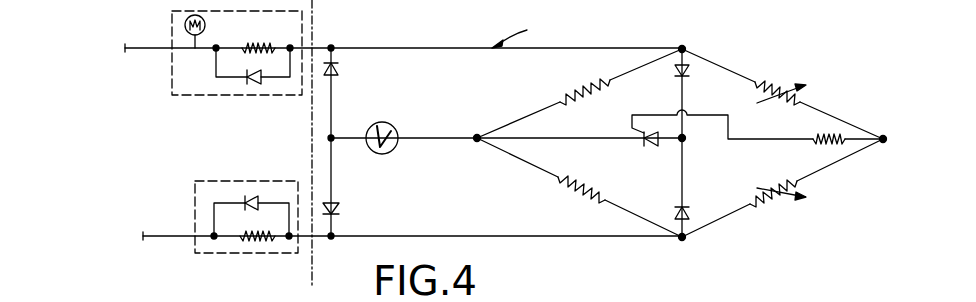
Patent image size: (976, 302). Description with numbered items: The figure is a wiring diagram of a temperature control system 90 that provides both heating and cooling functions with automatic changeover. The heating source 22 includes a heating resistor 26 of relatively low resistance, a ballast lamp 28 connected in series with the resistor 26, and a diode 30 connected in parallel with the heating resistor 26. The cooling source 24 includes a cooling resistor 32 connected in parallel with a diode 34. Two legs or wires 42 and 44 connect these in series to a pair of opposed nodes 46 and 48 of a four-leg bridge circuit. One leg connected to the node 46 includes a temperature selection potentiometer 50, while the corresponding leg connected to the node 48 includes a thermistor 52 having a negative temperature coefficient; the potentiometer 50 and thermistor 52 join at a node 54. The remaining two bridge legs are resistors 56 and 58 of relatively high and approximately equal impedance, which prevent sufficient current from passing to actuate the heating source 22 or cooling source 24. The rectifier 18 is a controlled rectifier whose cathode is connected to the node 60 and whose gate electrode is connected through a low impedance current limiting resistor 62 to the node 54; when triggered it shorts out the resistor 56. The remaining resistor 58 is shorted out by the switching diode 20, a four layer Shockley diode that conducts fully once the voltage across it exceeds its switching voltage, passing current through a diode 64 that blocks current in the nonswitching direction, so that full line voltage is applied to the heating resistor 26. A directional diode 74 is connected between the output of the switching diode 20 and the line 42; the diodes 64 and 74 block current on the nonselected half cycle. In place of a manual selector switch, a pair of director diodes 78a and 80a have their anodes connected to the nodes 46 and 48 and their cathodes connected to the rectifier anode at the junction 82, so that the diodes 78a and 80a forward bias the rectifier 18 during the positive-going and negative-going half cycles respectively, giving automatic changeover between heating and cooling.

The rectifier 18 is at (651, 147).
The switching diode 20 is at (390, 124).
The heating source 22 is at (302, 11).
The cooling source 24 is at (270, 254).
The heating resistor 26 is at (262, 43).
The ballast lamp 28 is at (185, 26).
The diode 30 is at (254, 85).
The cooling resistor 32 is at (245, 240).
The diode 34 is at (252, 196).
The wire 42 is at (411, 50).
The wire 44 is at (420, 236).
The node 46 is at (684, 47).
The node 48 is at (684, 240).
The potentiometer 50 is at (778, 90).
The thermistor 52 is at (783, 183).
The node 54 is at (885, 142).
The resistor 56 is at (578, 90).
The resistor 58 is at (578, 190).
The node 60 is at (476, 141).
The resistor 62 is at (815, 133).
The diode 64 is at (340, 210).
The directional diode 74 is at (340, 70).
The director diode 78a is at (692, 72).
The director diode 80a is at (690, 214).
The junction 82 is at (684, 141).
The temperature control system 90 is at (518, 33).